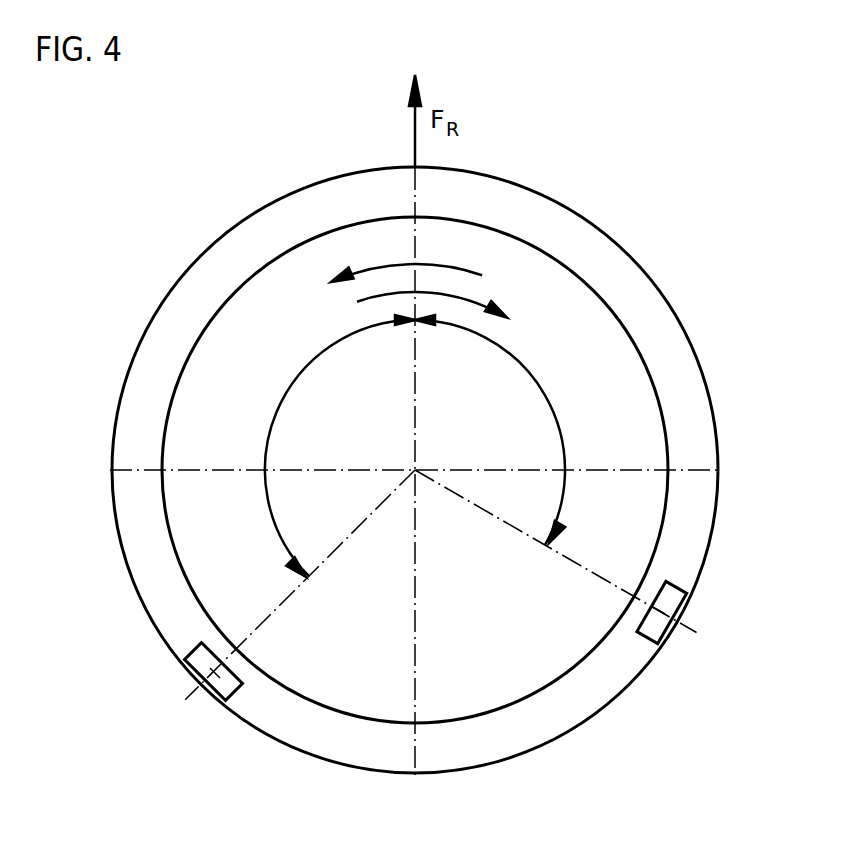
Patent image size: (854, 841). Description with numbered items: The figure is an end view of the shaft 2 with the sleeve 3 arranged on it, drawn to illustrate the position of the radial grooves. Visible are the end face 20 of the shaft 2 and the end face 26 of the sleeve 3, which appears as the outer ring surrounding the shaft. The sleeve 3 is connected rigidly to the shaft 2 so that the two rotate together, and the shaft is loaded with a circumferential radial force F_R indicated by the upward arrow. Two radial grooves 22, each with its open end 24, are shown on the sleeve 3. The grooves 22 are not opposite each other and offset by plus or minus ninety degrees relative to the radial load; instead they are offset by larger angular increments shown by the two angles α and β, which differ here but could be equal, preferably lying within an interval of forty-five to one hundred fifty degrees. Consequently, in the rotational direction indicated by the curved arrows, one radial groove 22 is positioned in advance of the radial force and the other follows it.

The shaft 2 is at (622, 418).
The sleeve 3 is at (150, 322).
The end face of the shaft 20 is at (565, 325).
The radial grooves 22 is at (705, 612).
The open end 24 is at (667, 600).
The end face of the sleeve 26 is at (323, 203).